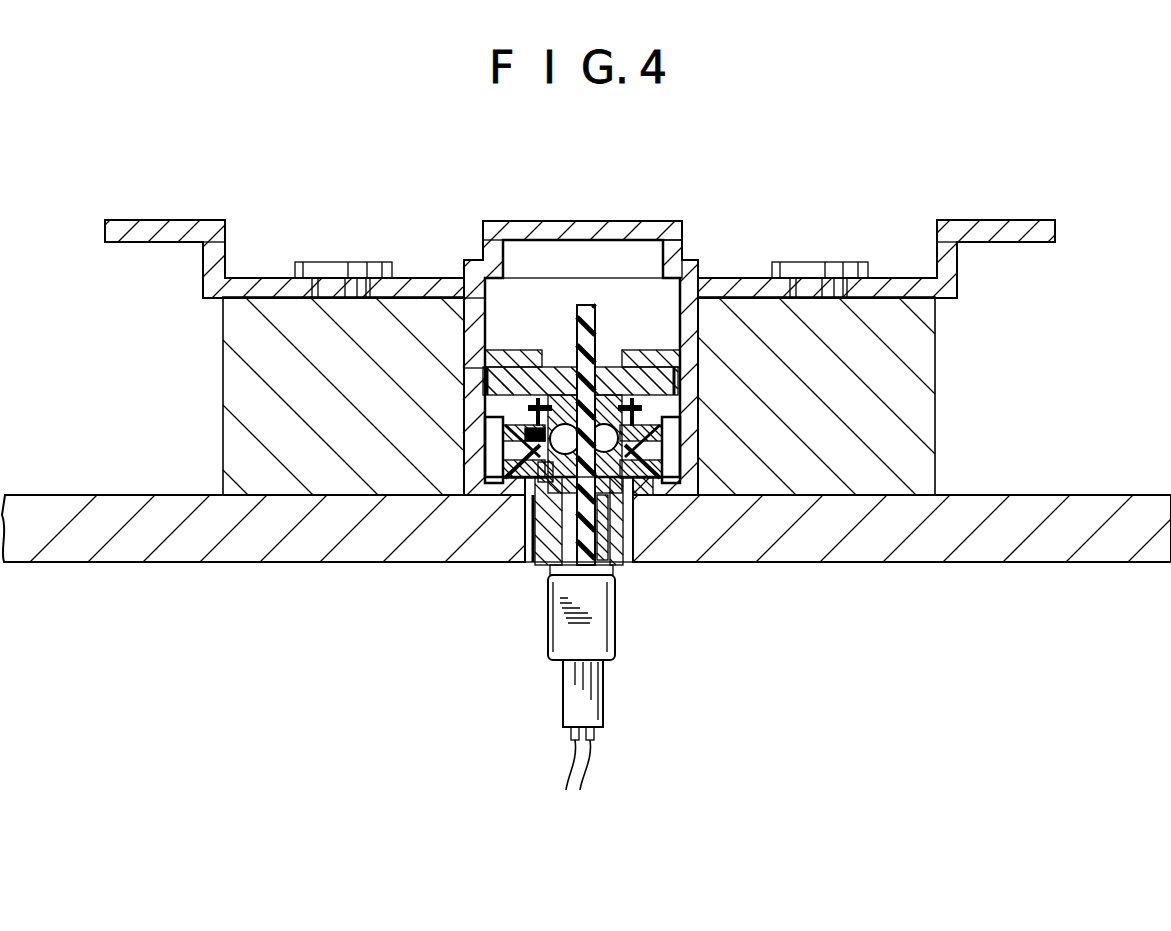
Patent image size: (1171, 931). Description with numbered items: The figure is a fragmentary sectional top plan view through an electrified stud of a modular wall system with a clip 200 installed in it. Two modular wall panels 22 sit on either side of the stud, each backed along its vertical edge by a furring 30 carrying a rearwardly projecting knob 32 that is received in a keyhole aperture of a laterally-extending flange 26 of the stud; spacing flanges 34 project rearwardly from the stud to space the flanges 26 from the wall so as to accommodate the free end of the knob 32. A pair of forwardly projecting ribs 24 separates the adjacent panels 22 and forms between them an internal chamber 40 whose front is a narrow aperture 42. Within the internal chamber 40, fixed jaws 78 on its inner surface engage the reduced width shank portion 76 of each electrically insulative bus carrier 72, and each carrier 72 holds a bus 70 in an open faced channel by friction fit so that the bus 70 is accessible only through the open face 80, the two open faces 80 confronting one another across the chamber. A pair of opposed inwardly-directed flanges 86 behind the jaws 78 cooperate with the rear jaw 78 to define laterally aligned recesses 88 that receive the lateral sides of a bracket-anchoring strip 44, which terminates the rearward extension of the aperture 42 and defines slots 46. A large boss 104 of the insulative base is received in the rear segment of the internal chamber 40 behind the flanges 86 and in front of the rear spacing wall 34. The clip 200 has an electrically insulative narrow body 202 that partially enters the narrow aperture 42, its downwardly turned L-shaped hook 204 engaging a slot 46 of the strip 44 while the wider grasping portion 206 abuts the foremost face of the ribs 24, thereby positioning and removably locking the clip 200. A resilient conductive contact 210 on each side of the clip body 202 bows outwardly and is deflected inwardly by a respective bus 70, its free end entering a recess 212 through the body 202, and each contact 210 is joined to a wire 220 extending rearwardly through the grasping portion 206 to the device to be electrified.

The modular wall panel 22 is at (222, 550).
The rib 24 is at (495, 432).
The laterally-extending flange 26 is at (263, 290).
The furring 30 is at (255, 393).
The knob 32 is at (345, 262).
The spacing flange 34 is at (175, 220).
The internal chamber 40 is at (525, 257).
The narrow aperture 42 is at (543, 577).
The bracket-anchoring strip 44 is at (487, 333).
The slot 46 is at (597, 357).
The bus 70 is at (522, 375).
The bus carrier 72 is at (660, 420).
The shank portion 76 is at (650, 445).
The jaw 78 is at (650, 417).
The open face 80 is at (628, 497).
The inwardly-directed flange 86 is at (522, 352).
The recess 88 is at (482, 380).
The large boss 104 is at (630, 260).
The clip 200 is at (575, 692).
The clip body 202 is at (617, 597).
The hook 204 is at (573, 320).
The grasping portion 206 is at (548, 600).
The contact 210 is at (500, 422).
The recess 212 is at (535, 440).
The wire 220 is at (585, 773).